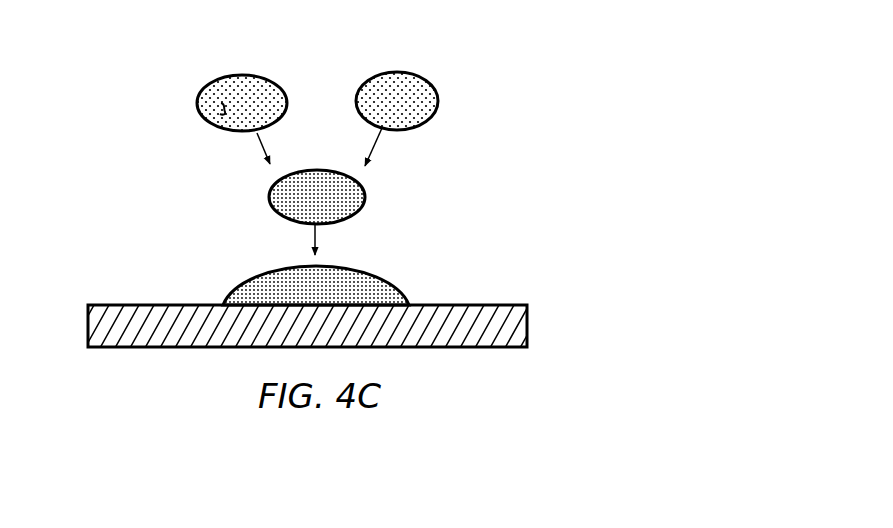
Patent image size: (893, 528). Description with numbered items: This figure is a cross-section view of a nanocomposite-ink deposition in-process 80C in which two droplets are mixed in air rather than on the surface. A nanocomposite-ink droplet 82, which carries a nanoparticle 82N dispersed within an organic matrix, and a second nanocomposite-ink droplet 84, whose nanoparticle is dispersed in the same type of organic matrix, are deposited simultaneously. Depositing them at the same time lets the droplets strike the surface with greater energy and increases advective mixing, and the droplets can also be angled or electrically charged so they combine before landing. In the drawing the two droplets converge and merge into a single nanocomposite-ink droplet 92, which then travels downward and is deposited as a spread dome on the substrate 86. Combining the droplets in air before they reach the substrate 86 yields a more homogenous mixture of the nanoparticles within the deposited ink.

The nanocomposite-ink deposition in-process 80C is at (145, 209).
The nanocomposite-ink droplet 82 is at (204, 79).
The nanoparticle 82N is at (222, 108).
The nanocomposite-ink droplet 84 is at (390, 69).
The nanocomposite-ink droplet 92 is at (363, 202).
The substrate 86 is at (527, 328).